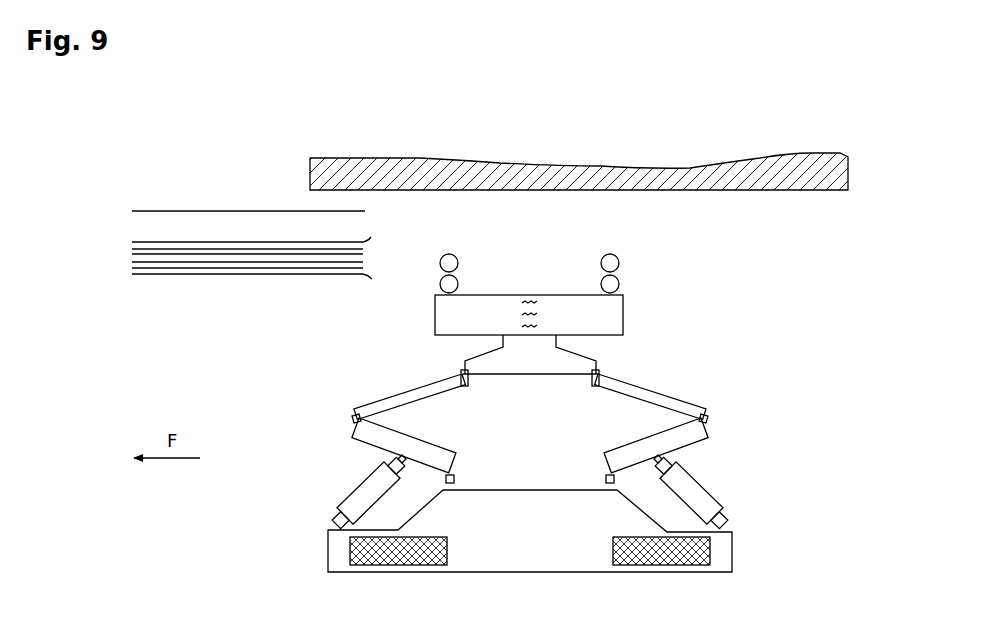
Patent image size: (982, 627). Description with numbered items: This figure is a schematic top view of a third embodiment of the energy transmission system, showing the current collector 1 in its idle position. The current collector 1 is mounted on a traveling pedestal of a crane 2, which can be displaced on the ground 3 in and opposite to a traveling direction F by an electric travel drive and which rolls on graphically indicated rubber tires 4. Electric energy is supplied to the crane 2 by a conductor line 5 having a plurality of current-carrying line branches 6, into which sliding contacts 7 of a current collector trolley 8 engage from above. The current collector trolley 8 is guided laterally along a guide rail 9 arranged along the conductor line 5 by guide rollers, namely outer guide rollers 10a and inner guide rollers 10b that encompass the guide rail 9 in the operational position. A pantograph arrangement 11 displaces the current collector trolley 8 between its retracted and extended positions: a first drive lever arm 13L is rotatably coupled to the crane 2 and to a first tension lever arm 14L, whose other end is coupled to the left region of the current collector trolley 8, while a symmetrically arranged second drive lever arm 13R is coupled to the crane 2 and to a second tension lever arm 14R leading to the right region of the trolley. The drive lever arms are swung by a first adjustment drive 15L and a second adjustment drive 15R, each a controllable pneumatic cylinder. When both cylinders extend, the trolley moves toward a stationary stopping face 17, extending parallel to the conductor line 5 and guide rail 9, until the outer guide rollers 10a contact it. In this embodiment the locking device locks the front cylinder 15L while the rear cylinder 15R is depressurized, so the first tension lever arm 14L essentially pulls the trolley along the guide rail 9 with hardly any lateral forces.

The current collector 1 is at (806, 377).
The crane 2 is at (538, 553).
The ground 3 is at (841, 511).
The rubber tires 4 is at (350, 553).
The conductor line 5 is at (160, 194).
The line branches 6 is at (174, 262).
The sliding contacts 7 is at (530, 335).
The current collector trolley 8 is at (623, 312).
The guide rail 9 is at (268, 211).
The outer guide rollers 10a is at (601, 264).
The inner guide rollers 10b is at (600, 286).
The pantograph arrangement 11 is at (707, 399).
The first drive lever arm 13L is at (347, 418).
The second drive lever arm 13R is at (712, 428).
The first tension lever arm 14L is at (393, 396).
The second tension lever arm 14R is at (681, 400).
The first adjustment drive 15L is at (347, 507).
The second adjustment drive 15R is at (717, 497).
The stopping face 17 is at (833, 190).